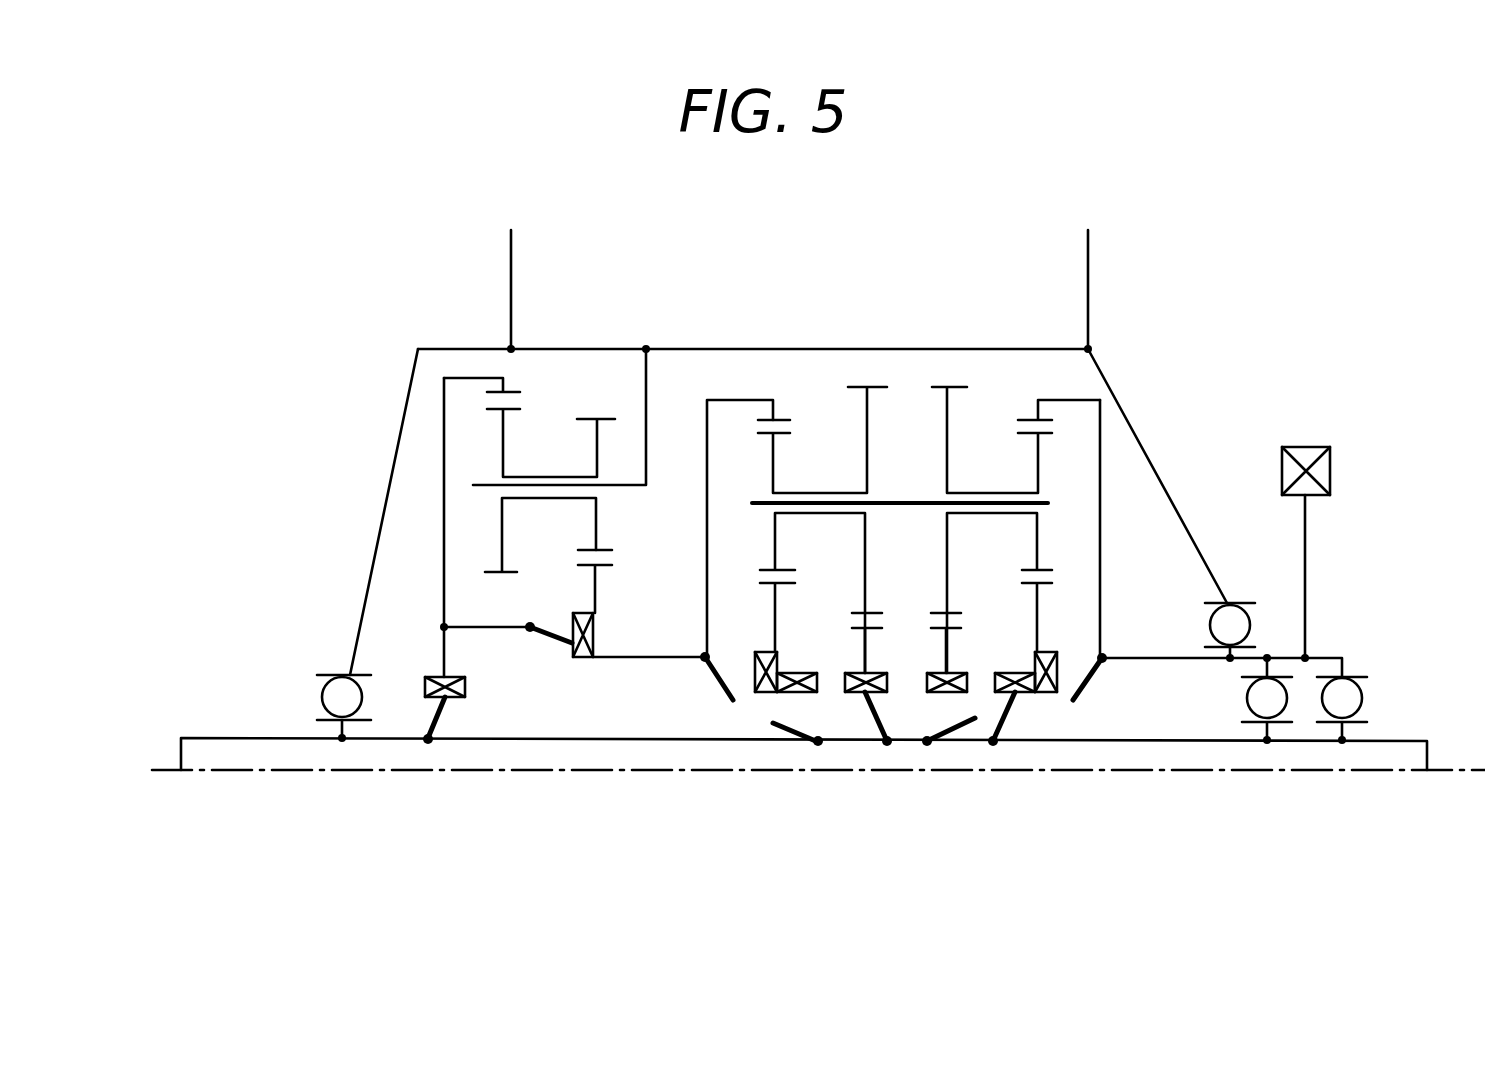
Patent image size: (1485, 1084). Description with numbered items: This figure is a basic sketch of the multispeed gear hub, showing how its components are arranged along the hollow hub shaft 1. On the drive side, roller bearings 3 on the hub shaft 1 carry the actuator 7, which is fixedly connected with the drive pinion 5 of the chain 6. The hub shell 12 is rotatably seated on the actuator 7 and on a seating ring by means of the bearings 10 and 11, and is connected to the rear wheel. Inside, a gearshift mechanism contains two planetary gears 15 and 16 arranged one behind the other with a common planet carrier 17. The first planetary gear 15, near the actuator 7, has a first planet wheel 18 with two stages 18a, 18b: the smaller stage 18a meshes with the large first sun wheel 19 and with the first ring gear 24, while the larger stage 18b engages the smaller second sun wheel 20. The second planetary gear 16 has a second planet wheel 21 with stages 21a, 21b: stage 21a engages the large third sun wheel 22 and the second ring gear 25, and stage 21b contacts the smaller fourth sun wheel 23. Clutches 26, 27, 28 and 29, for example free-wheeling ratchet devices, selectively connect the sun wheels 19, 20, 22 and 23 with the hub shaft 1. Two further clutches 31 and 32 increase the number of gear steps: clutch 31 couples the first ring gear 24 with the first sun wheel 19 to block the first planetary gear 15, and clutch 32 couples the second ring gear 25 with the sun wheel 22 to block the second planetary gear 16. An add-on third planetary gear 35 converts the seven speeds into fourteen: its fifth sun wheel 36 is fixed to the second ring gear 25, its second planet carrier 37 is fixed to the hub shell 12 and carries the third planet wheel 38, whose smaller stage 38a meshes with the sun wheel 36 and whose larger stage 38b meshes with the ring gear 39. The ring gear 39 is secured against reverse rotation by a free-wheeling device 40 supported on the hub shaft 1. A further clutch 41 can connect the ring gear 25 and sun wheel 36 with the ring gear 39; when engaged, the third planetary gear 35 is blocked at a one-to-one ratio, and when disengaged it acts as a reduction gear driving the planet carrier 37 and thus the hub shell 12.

The hub shaft 1 is at (1407, 755).
The roller bearings 3 is at (1273, 700).
The drive pinion 5 is at (1305, 570).
The chain 6 is at (1307, 447).
The actuator 7 is at (1193, 660).
The bearing 10 is at (1252, 612).
The bearing 11 is at (340, 695).
The hub shell 12 is at (798, 349).
The first planetary gear 15 is at (1016, 479).
The second planetary gear 16 is at (807, 477).
The common planet carrier 17 is at (910, 500).
The first planet wheel 18 is at (1016, 530).
The stage of first planet wheel 18a is at (1035, 535).
The stage of first planet wheel 18b is at (950, 420).
The first sun wheel 19 is at (1040, 600).
The second sun wheel 20 is at (950, 660).
The second planet wheel 21 is at (832, 530).
The stage of second planet wheel 21a is at (777, 463).
The stage of second planet wheel 21b is at (865, 575).
The third sun wheel 22 is at (775, 620).
The fourth sun wheel 23 is at (862, 650).
The first ring gear 24 is at (1083, 395).
The second ring gear 25 is at (743, 400).
The clutch 26 is at (1010, 732).
The clutch 27 is at (955, 742).
The clutch 28 is at (875, 745).
The clutch 29 is at (800, 745).
The first clutch 31 is at (1090, 682).
The second clutch 32 is at (703, 660).
The third planetary gear 35 is at (570, 447).
The fifth sun wheel 36 is at (595, 598).
The second planet carrier 37 is at (647, 420).
The third planet wheel 38 is at (547, 477).
The stage of third planet wheel 38a is at (598, 522).
The stage of third planet wheel 38b is at (503, 522).
The second ring gear 39 is at (440, 505).
The free-wheeling device 40 is at (457, 697).
The further clutch 41 is at (548, 650).